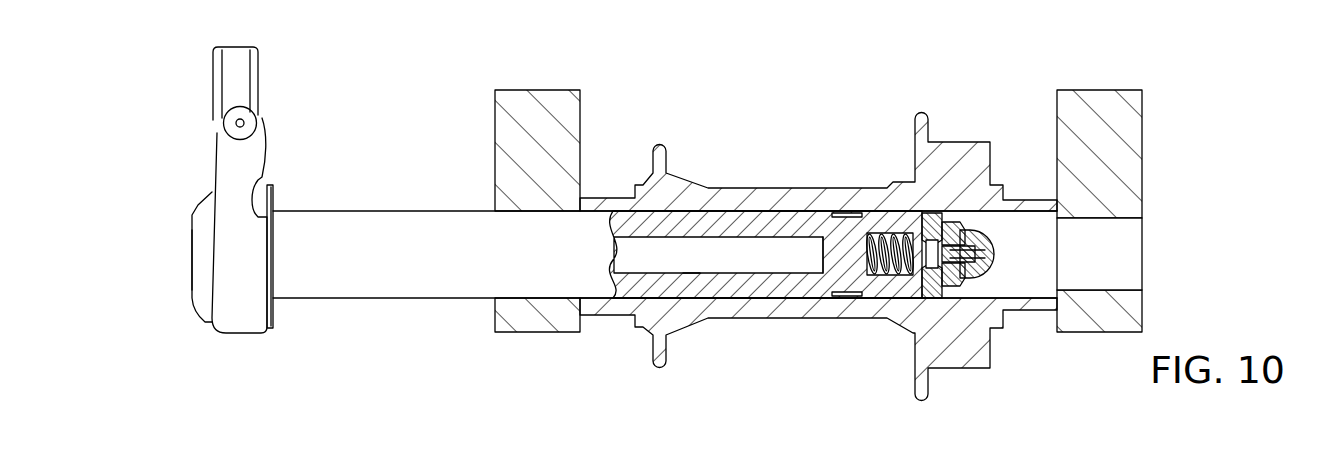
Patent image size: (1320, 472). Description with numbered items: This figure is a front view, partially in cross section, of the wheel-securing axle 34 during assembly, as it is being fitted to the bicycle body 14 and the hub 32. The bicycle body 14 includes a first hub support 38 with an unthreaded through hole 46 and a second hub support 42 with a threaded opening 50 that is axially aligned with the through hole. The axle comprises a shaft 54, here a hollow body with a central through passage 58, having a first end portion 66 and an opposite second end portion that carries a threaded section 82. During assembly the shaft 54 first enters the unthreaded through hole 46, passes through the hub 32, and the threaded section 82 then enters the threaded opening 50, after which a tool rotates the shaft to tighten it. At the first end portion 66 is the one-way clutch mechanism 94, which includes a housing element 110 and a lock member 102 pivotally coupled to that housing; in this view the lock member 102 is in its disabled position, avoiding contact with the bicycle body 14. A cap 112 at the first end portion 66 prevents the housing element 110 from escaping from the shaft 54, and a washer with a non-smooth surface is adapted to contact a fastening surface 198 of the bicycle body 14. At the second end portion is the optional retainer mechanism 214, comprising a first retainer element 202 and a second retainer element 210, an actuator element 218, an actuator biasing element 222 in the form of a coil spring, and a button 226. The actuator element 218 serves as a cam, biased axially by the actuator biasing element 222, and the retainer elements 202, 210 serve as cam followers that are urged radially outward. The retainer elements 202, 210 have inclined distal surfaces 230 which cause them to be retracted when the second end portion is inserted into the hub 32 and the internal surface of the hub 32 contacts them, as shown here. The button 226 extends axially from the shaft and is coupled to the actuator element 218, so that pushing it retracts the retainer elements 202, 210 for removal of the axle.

The bicycle body 14 is at (821, 221).
The hub 32 is at (683, 323).
The wheel-securing axle 34 is at (818, 236).
The first hub support 38 is at (540, 330).
The second hub support 42 is at (1131, 211).
The unthreaded through hole 46 is at (683, 218).
The threaded opening 50 is at (1120, 290).
The shaft 54 is at (368, 278).
The central through passage 58 is at (683, 275).
The first end portion 66 is at (190, 258).
The threaded section 82 is at (863, 210).
The one-way clutch mechanism 94 is at (273, 224).
The lock member 102 is at (238, 81).
The housing element 110 is at (235, 320).
The cap 112 is at (197, 297).
The fastening surface 198 is at (494, 117).
The first retainer element 202 is at (915, 218).
The second retainer element 210 is at (960, 300).
The retainer mechanism 214 is at (953, 265).
The actuator element 218 is at (932, 297).
The actuator biasing element 222 is at (868, 243).
The button 226 is at (993, 247).
The inclined distal surfaces 230 is at (952, 297).